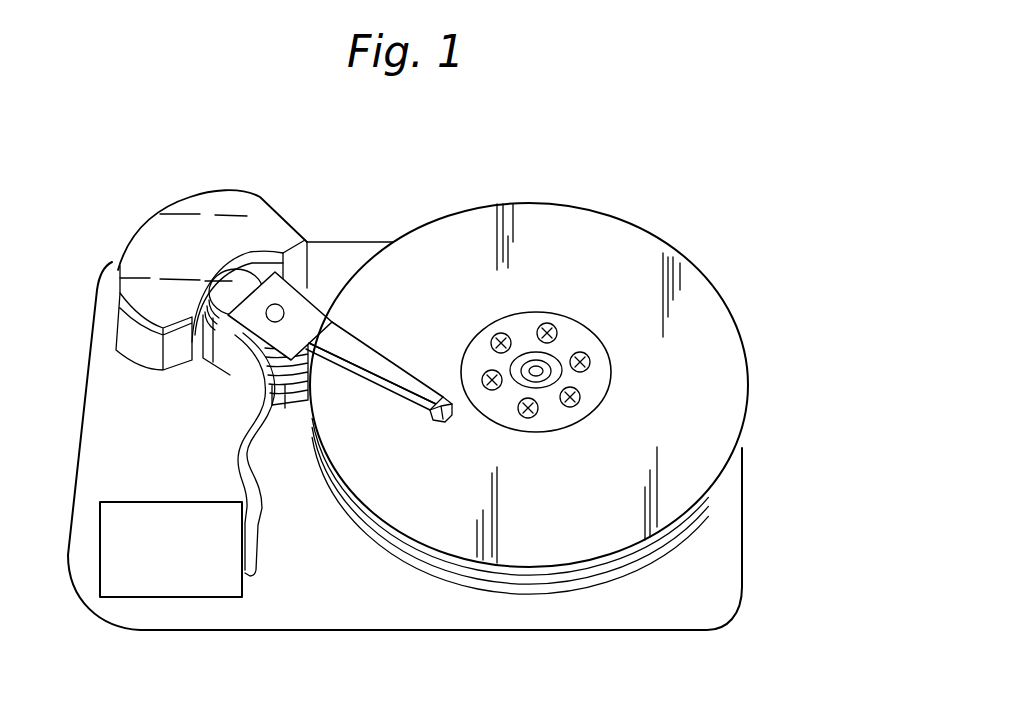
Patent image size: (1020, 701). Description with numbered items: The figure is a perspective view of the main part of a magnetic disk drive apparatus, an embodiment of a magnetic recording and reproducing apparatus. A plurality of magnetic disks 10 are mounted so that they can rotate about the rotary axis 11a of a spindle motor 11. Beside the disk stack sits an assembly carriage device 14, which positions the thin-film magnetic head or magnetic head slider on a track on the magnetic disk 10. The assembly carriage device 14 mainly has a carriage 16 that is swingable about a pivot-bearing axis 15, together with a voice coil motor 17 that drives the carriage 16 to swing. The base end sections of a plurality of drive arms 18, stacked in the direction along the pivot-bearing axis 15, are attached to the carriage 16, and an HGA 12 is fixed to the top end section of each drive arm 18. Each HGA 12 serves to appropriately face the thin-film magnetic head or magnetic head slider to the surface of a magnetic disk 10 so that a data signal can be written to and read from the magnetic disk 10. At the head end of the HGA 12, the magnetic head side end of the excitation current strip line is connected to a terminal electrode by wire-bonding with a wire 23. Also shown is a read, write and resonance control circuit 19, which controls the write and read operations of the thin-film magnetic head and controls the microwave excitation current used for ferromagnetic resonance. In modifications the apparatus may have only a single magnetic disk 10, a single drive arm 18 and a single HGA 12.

The magnetic disk 10 is at (665, 238).
The spindle motor 11 is at (519, 367).
The rotary axis 11a is at (541, 372).
The HGA 12 is at (402, 408).
The assembly carriage device 14 is at (233, 207).
The pivot-bearing axis 15 is at (285, 312).
The carriage 16 is at (247, 330).
The voice coil motor 17 is at (200, 350).
The drive arm 18 is at (357, 340).
The read, write and resonance control circuit 19 is at (148, 598).
The wire 23 is at (443, 421).